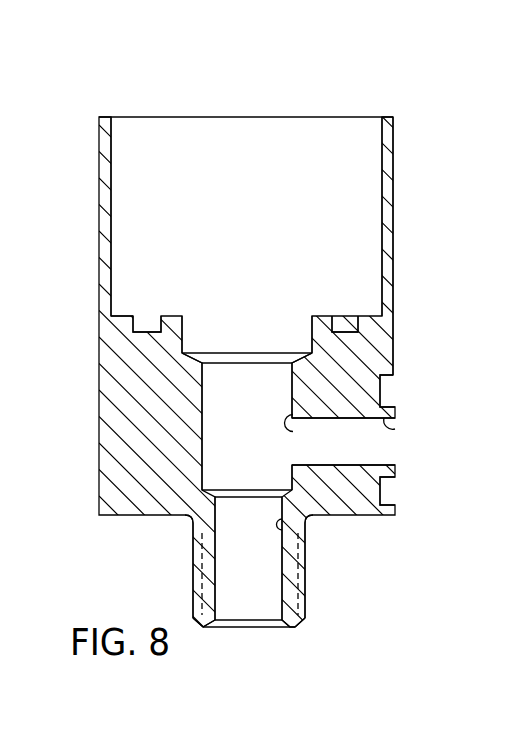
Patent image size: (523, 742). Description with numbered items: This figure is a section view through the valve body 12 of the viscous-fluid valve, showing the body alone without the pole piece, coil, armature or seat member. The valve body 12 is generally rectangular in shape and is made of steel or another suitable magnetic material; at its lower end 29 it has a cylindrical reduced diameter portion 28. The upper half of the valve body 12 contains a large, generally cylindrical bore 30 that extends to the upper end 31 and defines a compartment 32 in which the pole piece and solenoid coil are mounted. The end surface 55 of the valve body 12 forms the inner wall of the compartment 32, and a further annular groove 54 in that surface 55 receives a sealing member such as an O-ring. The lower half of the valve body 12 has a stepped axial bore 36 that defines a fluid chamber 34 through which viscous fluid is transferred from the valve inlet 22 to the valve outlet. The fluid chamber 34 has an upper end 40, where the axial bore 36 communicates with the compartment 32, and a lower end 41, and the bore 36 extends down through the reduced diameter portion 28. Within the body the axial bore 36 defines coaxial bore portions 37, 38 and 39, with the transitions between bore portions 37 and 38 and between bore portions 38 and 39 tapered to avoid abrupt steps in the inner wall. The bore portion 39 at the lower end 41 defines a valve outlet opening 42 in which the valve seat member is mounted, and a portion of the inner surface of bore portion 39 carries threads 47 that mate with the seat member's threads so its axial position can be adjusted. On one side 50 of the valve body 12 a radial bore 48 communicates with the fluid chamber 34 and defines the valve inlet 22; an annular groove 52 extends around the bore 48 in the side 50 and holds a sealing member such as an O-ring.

The valve body 12 is at (66, 216).
The cylindrical bore 30 is at (175, 128).
The upper end 31 is at (390, 115).
The compartment 32 is at (308, 188).
The fluid chamber 34 is at (211, 411).
The stepped axial bore 36 is at (216, 332).
The upper end 40 is at (258, 315).
The bore portion 37 is at (306, 317).
The annular groove 54 is at (148, 316).
The end surface 55 is at (123, 316).
The side 50 is at (397, 345).
The radial bore 48 is at (398, 425).
The valve inlet 22 is at (383, 447).
The annular groove 52 is at (388, 493).
The bore portion 38 is at (295, 432).
The bore portion 39 is at (285, 527).
The lower end 29 is at (193, 545).
The reduced diameter portion 28 is at (193, 572).
The threads 47 is at (228, 612).
The lower end 41 is at (267, 628).
The valve outlet opening 42 is at (273, 615).